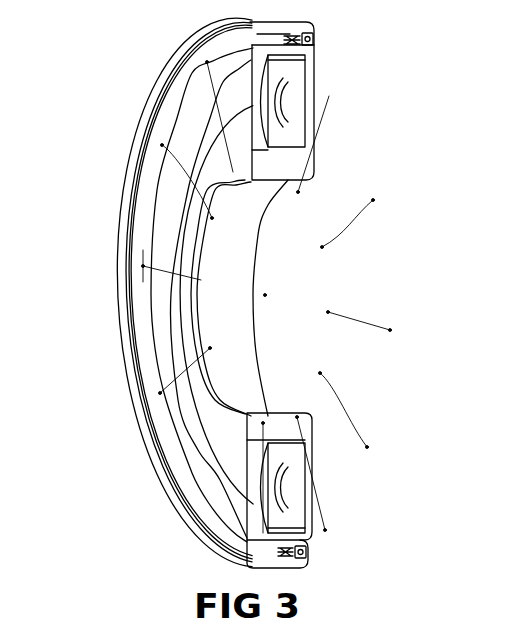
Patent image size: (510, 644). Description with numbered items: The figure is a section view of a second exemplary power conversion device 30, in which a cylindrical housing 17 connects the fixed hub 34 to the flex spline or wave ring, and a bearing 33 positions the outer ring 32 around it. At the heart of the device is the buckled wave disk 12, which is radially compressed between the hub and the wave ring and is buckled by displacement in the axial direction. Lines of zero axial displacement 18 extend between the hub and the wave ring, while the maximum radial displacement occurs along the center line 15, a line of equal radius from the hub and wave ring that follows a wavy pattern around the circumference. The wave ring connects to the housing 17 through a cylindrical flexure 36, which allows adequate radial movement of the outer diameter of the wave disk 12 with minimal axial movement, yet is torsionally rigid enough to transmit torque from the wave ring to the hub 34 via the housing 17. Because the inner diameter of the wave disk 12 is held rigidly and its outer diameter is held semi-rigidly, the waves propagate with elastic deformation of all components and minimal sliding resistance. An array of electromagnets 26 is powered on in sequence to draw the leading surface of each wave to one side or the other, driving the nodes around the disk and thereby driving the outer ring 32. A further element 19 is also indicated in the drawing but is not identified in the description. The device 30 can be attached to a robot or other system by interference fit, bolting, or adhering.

The power conversion device 30 is at (95, 43).
The outer ring 32 is at (191, 527).
The buckled wave disk 12 is at (190, 120).
The center line 15 is at (150, 214).
The support ring 19 is at (190, 174).
The lines of zero axial displacement 18 is at (212, 87).
The housing 17 is at (314, 100).
The electromagnets 26 is at (295, 120).
The hub 34 is at (300, 167).
The cylindrical flexure 36 is at (301, 57).
The bearing 33 is at (313, 38).